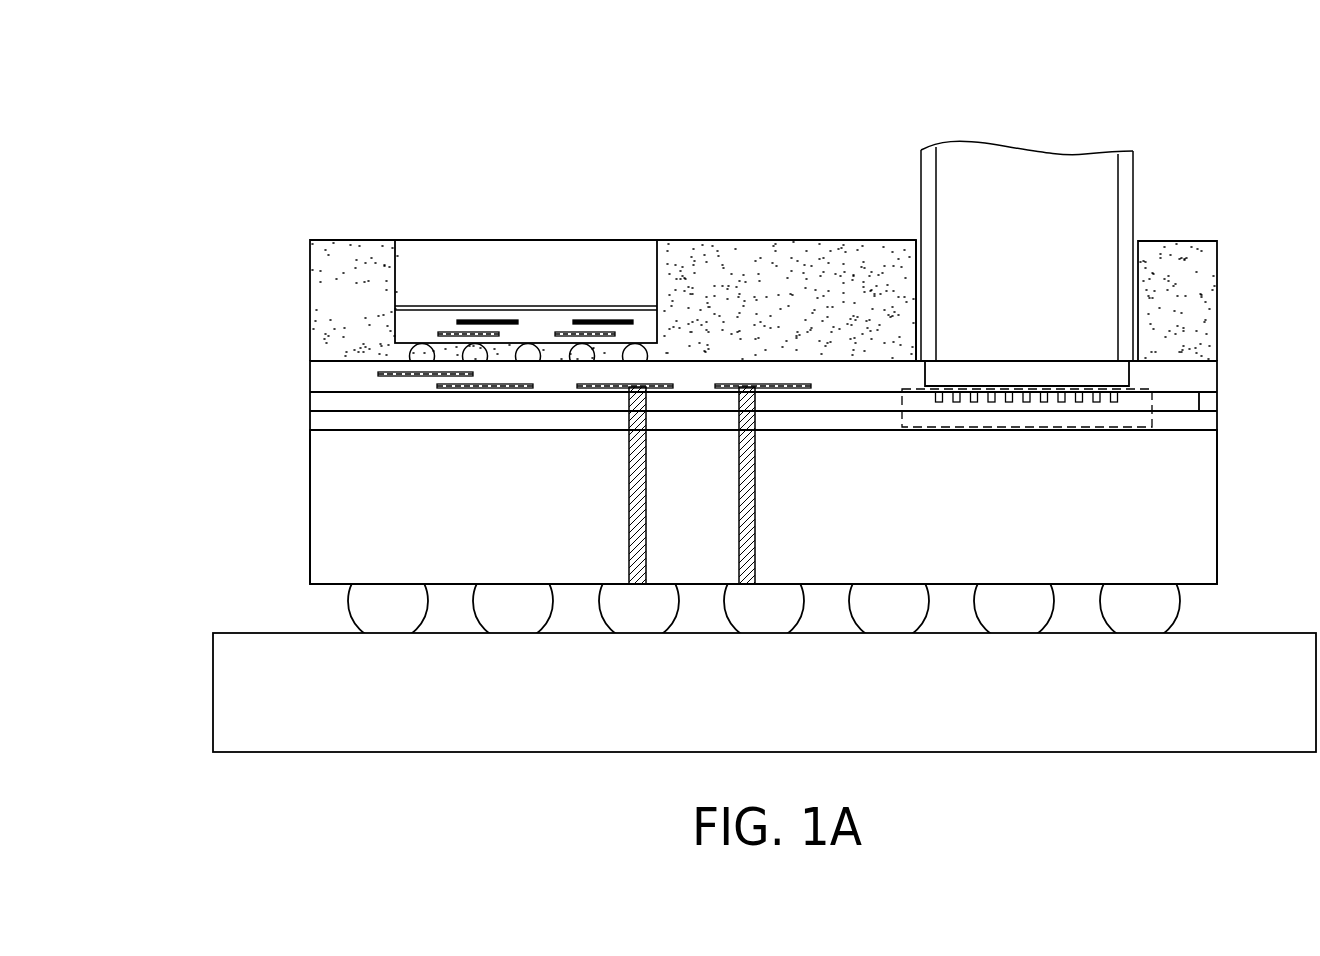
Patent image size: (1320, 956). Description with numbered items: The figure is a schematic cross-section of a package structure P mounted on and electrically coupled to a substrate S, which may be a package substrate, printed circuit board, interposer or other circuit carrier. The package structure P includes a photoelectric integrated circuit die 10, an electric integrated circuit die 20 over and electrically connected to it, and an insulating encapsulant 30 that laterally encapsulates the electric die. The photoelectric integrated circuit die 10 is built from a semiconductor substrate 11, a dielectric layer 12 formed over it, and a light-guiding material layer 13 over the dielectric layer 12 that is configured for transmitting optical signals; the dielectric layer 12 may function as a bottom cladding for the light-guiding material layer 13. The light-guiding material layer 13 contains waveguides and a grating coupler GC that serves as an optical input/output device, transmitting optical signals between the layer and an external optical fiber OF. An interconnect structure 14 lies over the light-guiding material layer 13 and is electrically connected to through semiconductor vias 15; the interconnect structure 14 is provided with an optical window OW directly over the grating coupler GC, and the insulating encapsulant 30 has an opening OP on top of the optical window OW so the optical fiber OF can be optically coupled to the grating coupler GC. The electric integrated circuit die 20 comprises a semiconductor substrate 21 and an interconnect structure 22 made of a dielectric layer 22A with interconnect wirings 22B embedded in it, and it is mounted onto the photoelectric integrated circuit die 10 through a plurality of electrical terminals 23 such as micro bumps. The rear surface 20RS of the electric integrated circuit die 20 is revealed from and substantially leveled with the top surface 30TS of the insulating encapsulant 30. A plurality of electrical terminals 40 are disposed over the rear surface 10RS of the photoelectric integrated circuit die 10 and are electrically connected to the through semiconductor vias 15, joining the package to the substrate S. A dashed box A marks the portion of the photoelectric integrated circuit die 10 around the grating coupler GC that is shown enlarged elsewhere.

The package structure P is at (173, 234).
The substrate S is at (173, 675).
The photoelectric integrated circuit die 10 is at (303, 361).
The semiconductor substrate 11 is at (1175, 527).
The dielectric layer 12 is at (1200, 419).
The light-guiding material layer 13 is at (1223, 392).
The interconnect structure 14 is at (1223, 361).
The through semiconductor vias 15 is at (748, 576).
The rear surface 10RS is at (452, 590).
The electric integrated circuit die 20 is at (513, 195).
The semiconductor substrate 21 is at (608, 253).
The interconnect structure 22 is at (571, 206).
The dielectric layer 22A is at (538, 325).
The interconnect wirings 22B is at (470, 319).
The electrical terminals 23 is at (420, 352).
The rear surface 20RS is at (590, 236).
The insulating encapsulant 30 is at (1202, 259).
The top surface 30TS is at (777, 236).
The electrical terminals 40 is at (372, 603).
The optical fiber OF is at (1068, 180).
The opening OP is at (915, 309).
The optical window OW is at (930, 382).
The grating coupler GC is at (1070, 397).
The dashed box A is at (1125, 427).